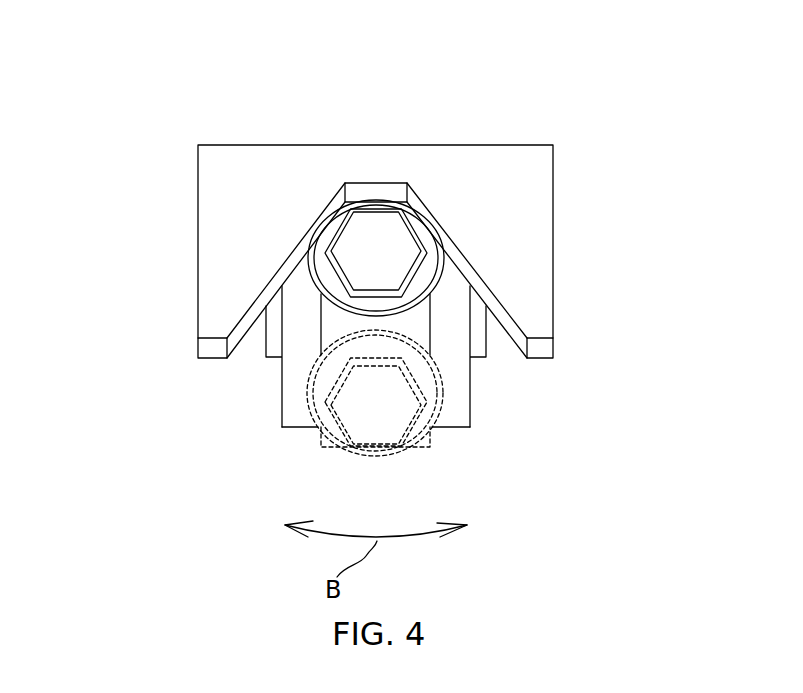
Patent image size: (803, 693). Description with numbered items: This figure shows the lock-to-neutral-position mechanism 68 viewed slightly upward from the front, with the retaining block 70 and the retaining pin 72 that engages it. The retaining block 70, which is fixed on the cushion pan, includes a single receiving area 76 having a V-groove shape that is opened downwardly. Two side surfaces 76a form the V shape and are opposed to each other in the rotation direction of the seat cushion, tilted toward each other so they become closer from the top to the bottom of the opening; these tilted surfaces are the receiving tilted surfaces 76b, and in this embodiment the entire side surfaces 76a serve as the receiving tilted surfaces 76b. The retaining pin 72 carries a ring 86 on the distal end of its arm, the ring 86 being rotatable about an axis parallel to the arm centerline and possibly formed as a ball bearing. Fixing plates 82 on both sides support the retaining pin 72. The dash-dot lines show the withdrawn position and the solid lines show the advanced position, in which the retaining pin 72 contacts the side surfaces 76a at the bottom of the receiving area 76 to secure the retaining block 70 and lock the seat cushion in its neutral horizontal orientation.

The lock-to-neutral-position mechanism 68 is at (478, 98).
The retaining block 70 is at (543, 187).
The retaining pin 72 is at (398, 192).
The receiving area 76 is at (448, 305).
The side surfaces 76a is at (289, 262).
The receiving tilted surfaces 76b is at (497, 302).
The fixing plates 82 is at (290, 398).
The ring 86 is at (328, 224).